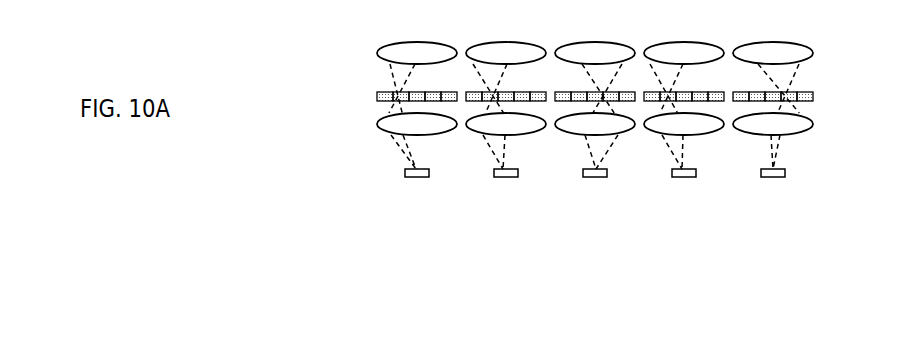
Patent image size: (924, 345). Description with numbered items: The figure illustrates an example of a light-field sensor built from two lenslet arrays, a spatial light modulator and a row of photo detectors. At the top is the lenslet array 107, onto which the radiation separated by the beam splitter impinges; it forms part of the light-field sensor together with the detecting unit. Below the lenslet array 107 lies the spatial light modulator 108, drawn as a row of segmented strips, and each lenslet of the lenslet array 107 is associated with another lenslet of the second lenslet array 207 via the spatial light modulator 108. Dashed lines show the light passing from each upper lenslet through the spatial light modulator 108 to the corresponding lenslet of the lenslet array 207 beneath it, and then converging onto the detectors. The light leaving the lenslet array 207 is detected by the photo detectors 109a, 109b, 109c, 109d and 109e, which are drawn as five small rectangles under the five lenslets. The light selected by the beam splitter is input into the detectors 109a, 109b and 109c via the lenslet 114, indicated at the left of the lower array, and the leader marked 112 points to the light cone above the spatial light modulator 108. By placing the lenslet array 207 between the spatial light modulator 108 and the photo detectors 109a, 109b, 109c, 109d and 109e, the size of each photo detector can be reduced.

The lenslet array 107 is at (830, 32).
The spatial light modulator 108 is at (830, 88).
The lenslet array 207 is at (830, 115).
The light beams converging through apertures 112 is at (392, 72).
The lenslet 114 is at (392, 124).
The photo detector 109a is at (417, 178).
The photo detector 109b is at (506, 178).
The photo detector 109c is at (595, 178).
The photo detector 109d is at (684, 178).
The photo detector 109e is at (773, 178).